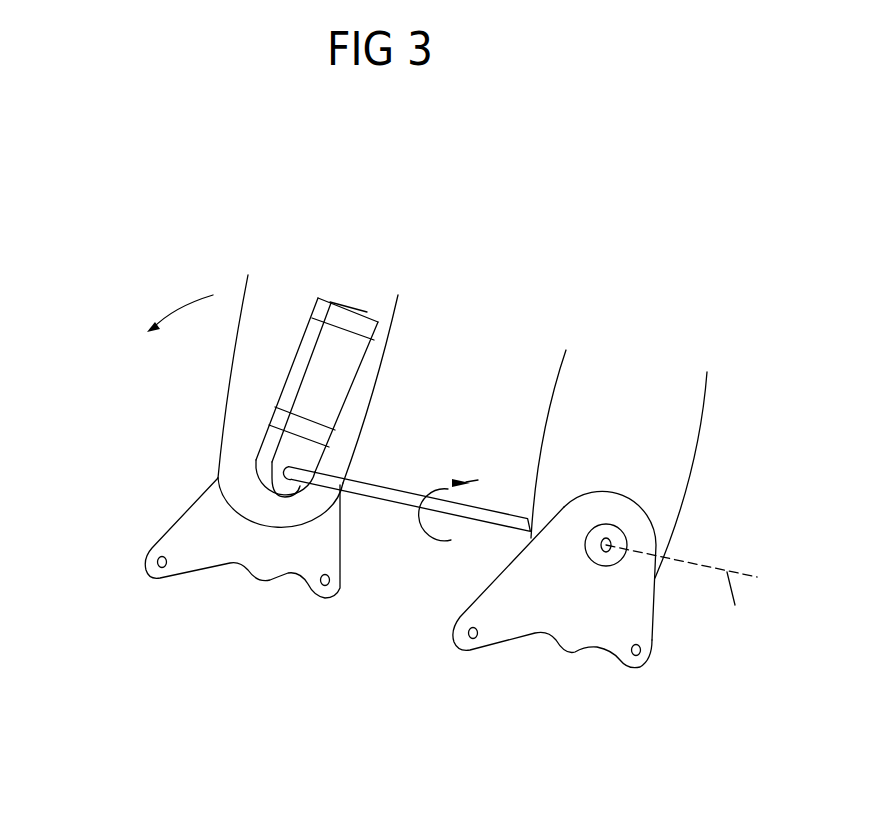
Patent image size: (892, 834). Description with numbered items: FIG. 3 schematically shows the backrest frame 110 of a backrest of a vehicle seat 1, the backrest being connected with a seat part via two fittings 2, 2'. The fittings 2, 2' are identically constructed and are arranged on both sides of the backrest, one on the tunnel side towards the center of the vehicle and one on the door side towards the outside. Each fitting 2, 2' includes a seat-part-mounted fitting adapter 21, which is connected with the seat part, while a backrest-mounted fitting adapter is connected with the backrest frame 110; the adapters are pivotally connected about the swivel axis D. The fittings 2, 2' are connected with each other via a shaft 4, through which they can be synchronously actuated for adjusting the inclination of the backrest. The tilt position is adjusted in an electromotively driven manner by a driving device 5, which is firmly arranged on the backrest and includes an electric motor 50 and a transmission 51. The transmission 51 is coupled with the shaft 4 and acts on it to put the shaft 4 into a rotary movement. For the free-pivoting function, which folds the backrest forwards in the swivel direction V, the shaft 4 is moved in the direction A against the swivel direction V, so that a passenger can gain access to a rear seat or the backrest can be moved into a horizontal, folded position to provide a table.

The vehicle seat 1 is at (126, 406).
The fitting 2 is at (604, 603).
The fitting 2' is at (216, 526).
The seat-part-mounted fitting adapter 21 is at (570, 630).
The shaft 4 is at (402, 498).
The driving device 5 is at (381, 374).
The electric motor 50 is at (322, 385).
The transmission 51 is at (272, 483).
The backrest frame 110 is at (350, 408).